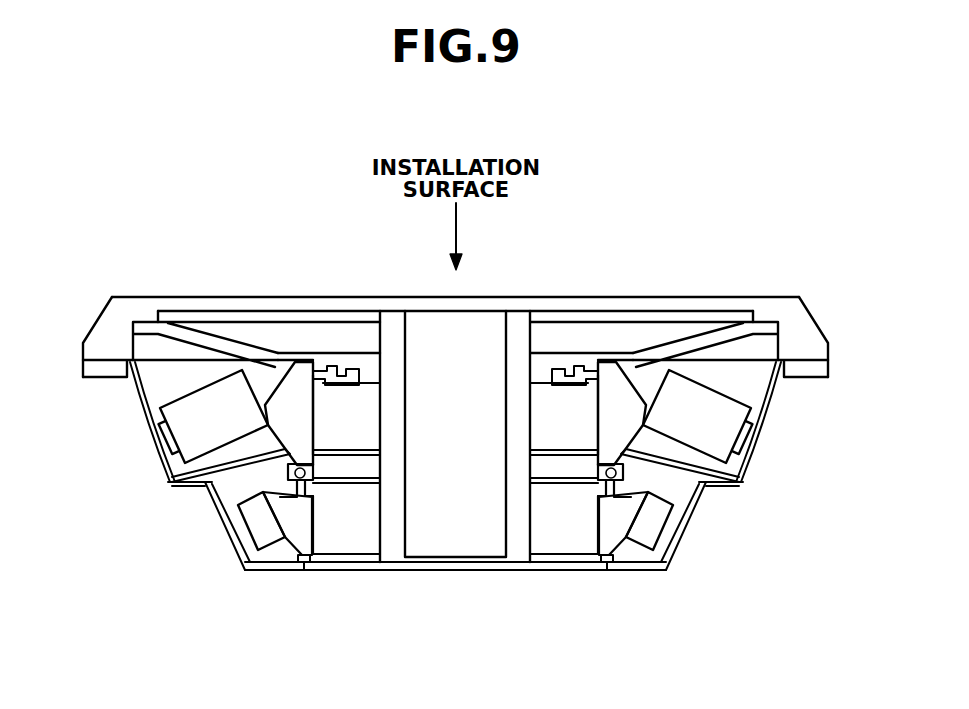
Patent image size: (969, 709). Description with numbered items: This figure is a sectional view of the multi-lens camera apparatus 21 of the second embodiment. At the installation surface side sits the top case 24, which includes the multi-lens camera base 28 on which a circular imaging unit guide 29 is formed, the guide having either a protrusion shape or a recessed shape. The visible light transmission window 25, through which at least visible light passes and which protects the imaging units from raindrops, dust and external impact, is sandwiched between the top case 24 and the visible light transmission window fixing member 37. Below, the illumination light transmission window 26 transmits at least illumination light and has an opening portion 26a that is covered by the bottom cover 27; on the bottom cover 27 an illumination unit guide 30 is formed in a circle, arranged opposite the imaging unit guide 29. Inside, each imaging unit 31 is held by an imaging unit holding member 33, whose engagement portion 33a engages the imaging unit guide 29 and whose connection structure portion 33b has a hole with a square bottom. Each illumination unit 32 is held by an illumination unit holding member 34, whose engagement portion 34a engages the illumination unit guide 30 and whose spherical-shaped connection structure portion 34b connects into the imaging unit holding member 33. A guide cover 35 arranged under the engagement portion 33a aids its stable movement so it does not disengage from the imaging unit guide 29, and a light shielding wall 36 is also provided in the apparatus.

The multi-lens camera apparatus 21 is at (84, 284).
The top case 24 is at (792, 320).
The visible light transmission window 25 is at (758, 458).
The illumination light transmission window 26 is at (677, 553).
The opening portion 26a is at (630, 567).
The bottom cover 27 is at (473, 567).
The multi-lens camera base 28 is at (727, 337).
The imaging unit guide 29 is at (338, 372).
The illumination unit guide 30 is at (307, 562).
The imaging unit 31 is at (163, 430).
The illumination unit 32 is at (250, 528).
The imaging unit holding member 33 is at (287, 398).
The engagement portion 33a is at (330, 366).
The connection structure portion 33b is at (312, 470).
The illumination unit holding member 34 is at (290, 501).
The engagement portion 34a is at (297, 551).
The connection structure portion 34b is at (317, 484).
The guide cover 35 is at (337, 387).
The light shielding wall 36 is at (225, 478).
The visible light transmission window fixing member 37 is at (815, 366).